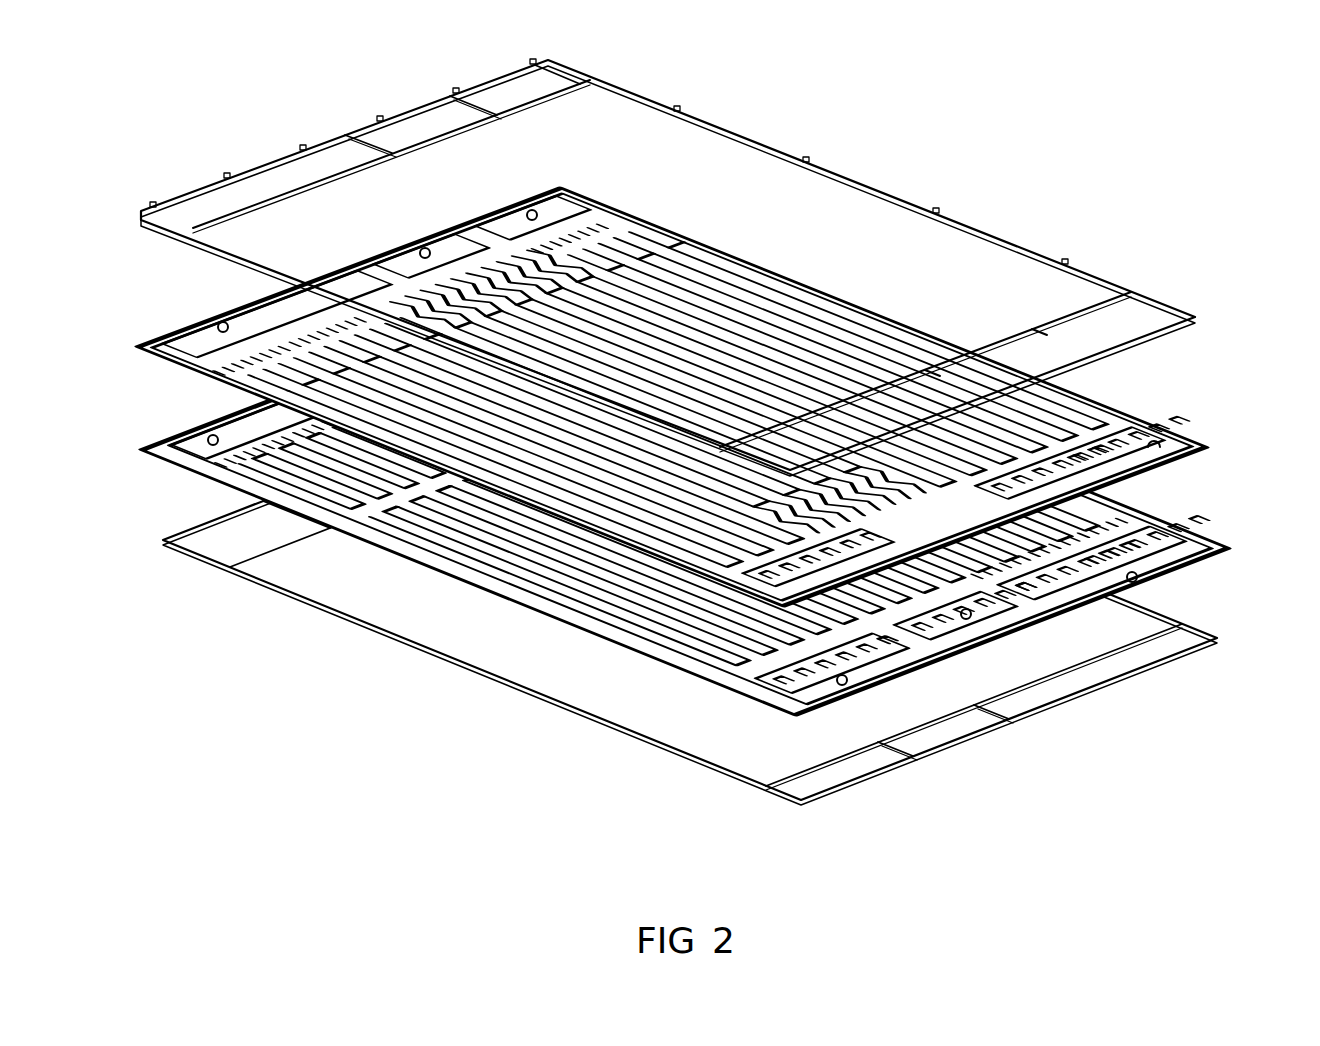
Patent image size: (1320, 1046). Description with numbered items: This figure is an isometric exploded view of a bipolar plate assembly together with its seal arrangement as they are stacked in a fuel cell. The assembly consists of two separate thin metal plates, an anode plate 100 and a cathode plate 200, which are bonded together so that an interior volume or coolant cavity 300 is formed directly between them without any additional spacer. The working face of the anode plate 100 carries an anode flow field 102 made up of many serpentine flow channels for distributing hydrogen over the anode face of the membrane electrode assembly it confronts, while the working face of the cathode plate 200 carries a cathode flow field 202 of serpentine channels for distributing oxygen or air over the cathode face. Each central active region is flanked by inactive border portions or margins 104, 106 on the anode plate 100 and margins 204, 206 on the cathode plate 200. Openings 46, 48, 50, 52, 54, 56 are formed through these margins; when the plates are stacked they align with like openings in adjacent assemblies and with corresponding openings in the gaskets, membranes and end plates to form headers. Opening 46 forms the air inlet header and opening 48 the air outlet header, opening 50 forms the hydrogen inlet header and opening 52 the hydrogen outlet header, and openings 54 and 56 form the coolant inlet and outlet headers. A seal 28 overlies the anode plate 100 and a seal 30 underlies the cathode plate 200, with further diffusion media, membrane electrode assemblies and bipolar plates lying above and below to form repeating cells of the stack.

The seal 28 is at (873, 197).
The seal 30 is at (488, 669).
The anode plate 100 is at (666, 430).
The anode flow field 102 is at (673, 391).
The inactive border portion (margin) 104 is at (1215, 436).
The inactive border portion (margin) 106 is at (192, 395).
The cathode plate 200 is at (654, 553).
The cathode flow field 202 is at (462, 597).
The inactive border portion (margin) 204 is at (1240, 543).
The inactive border portion (margin) 206 is at (192, 500).
The coolant cavity 300 is at (1175, 507).
The opening (air inlet header) 46 is at (1206, 451).
The opening (air outlet header) 48 is at (224, 322).
The opening (hydrogen inlet header) 50 is at (842, 685).
The opening (hydrogen outlet header) 52 is at (532, 210).
The opening (coolant inlet header) 54 is at (967, 619).
The opening (coolant outlet header) 56 is at (426, 248).